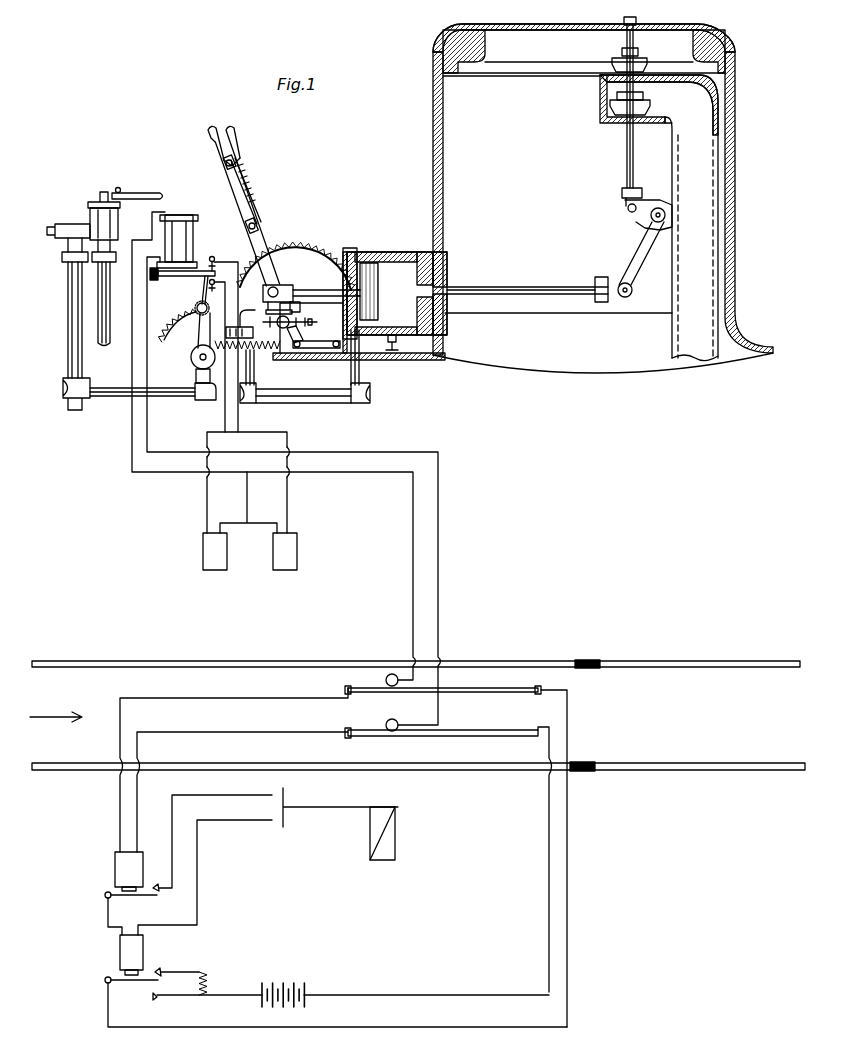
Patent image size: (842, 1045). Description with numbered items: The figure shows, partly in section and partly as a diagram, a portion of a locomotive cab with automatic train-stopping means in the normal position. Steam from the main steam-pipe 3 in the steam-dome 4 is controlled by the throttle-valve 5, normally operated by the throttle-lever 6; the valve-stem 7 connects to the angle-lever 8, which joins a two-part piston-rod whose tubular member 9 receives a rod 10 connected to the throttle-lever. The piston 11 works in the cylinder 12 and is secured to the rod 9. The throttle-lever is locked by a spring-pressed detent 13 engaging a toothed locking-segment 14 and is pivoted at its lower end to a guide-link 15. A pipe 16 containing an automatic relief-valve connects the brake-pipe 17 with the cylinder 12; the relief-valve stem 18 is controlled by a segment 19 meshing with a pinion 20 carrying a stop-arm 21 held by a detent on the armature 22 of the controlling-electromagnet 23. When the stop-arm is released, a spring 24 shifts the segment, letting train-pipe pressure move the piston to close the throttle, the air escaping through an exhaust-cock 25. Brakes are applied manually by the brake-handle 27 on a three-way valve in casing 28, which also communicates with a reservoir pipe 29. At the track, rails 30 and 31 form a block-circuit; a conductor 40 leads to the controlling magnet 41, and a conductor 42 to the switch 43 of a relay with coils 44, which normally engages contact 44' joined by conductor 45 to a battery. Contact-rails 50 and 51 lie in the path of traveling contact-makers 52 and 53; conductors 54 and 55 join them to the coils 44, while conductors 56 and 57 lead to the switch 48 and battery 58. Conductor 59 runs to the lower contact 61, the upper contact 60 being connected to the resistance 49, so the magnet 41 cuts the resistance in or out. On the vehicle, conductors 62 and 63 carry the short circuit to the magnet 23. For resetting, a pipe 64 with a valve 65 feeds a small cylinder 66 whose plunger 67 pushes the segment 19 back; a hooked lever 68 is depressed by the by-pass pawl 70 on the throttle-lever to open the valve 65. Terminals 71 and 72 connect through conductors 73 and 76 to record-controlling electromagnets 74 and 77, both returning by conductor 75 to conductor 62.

The main steam-pipe 3 is at (659, 218).
The steam-dome 4 is at (603, 198).
The throttle-valve 5 is at (390, 833).
The throttle-lever 6 is at (268, 262).
The valve-stem 7 is at (625, 150).
The angle-lever 8 is at (642, 249).
The piston-rod member 9 is at (547, 297).
The rod 10 is at (312, 285).
The piston 11 is at (368, 270).
The cylinder 12 is at (400, 262).
The locking detent 13 is at (250, 210).
The toothed locking-segment 14 is at (306, 246).
The guide-link 15 is at (305, 356).
The pipe 16 is at (176, 396).
The brake-pipe 17 is at (68, 344).
The relief-valve stem 18 is at (192, 359).
The segment 19 is at (200, 338).
The pinion 20 is at (196, 307).
The stop-arm 21 is at (200, 291).
The armature 22 is at (210, 270).
The controlling-electromagnet 23 is at (196, 238).
The spring 24 is at (257, 352).
The exhaust-cock 25 is at (394, 348).
The brake-handle 27 is at (136, 196).
The three-way valve casing 28 is at (90, 225).
The pipe 29 is at (105, 347).
The rail 30 is at (640, 660).
The rail 31 is at (647, 763).
The conductor 40 is at (198, 878).
The controlling magnet 41 is at (131, 955).
The conductor 42 is at (106, 910).
The switch 43 is at (130, 896).
The relay coils 44 is at (129, 871).
The contact 44' is at (169, 899).
The conductor 45 is at (278, 832).
The switch 48 is at (131, 991).
The resistance 49 is at (215, 982).
The contact-rail 50 is at (494, 691).
The contact-rail 51 is at (462, 727).
The contact-maker 52 is at (390, 674).
The contact-maker 53 is at (396, 731).
The conductor 54 is at (234, 763).
The conductor 55 is at (242, 782).
The conductor 56 is at (337, 1014).
The conductor 57 is at (426, 983).
The battery 58 is at (283, 983).
The conductor 59 is at (209, 1006).
The contact 60 is at (158, 972).
The contact 61 is at (164, 1005).
The conductor 62 is at (413, 498).
The conductor 63 is at (440, 497).
The pipe 64 is at (306, 333).
The fluid-pressure-controlling valve 65 is at (298, 321).
The cylinder 66 is at (244, 325).
The valve-resetting plunger 67 is at (180, 320).
The hooked lever 68 is at (305, 291).
The by-pass pawl 70 is at (285, 280).
The terminal 71 is at (214, 292).
The terminal 72 is at (218, 263).
The conductor 73 is at (206, 497).
The electromagnet 74 is at (215, 551).
The conductor 75 is at (247, 511).
The conductor 76 is at (284, 432).
The electromagnet 77 is at (285, 551).